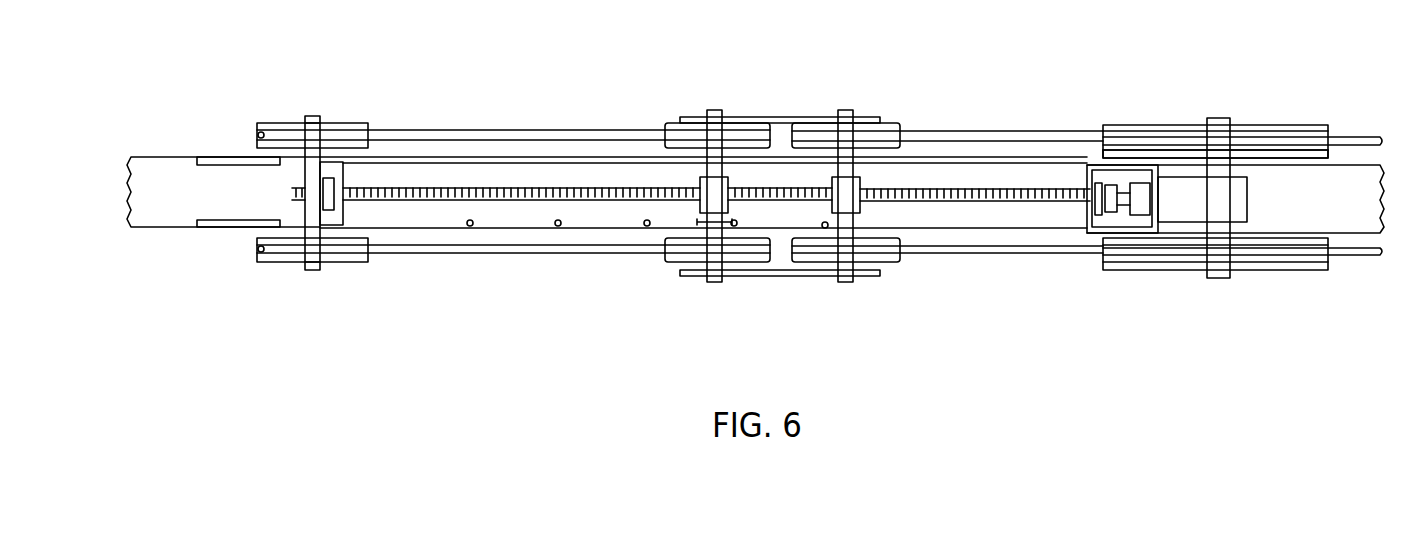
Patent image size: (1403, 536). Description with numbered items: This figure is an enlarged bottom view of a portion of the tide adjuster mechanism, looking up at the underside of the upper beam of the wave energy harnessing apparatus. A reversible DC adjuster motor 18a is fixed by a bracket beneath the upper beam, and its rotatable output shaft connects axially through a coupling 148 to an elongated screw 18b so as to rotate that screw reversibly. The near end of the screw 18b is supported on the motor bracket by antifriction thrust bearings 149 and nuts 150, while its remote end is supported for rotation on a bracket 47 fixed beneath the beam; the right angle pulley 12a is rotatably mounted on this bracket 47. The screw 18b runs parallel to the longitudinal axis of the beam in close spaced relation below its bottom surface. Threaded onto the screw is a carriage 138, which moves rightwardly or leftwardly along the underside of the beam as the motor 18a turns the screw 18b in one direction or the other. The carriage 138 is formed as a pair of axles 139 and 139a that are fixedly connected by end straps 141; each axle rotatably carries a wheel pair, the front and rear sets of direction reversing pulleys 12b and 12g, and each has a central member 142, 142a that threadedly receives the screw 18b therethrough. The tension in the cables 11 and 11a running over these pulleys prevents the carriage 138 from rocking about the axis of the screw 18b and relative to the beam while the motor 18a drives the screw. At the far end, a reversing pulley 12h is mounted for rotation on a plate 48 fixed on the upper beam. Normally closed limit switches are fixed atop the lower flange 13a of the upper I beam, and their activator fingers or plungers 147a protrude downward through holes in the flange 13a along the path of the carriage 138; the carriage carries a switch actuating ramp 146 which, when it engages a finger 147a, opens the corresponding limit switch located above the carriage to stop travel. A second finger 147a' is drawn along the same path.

The cable 11 is at (425, 253).
The cable 11a is at (1037, 133).
The right angle pulley 12a is at (338, 133).
The direction reversing pulley 12b is at (745, 127).
The direction reversing pulley 12g is at (798, 128).
The reversing pulley 12h is at (1128, 126).
The lower flange of upper I beam 13a is at (905, 170).
The reversible DC adjuster motor 18a is at (1213, 195).
The elongated screw 18b is at (470, 188).
The bracket 47 is at (257, 159).
The plate 48 is at (1198, 160).
The carriage 138 is at (727, 323).
The axle 139 is at (713, 167).
The axle 139a is at (850, 164).
The end strap 141 is at (812, 118).
The central member 142 is at (713, 195).
The central member 142a is at (860, 183).
The switch actuating ramp 146 is at (697, 224).
The activator finger 147a is at (511, 269).
The pin 147a' is at (590, 267).
The coupling 148 is at (1142, 207).
The antifriction thrust bearing 149 is at (1093, 200).
The nut 150 is at (1107, 210).